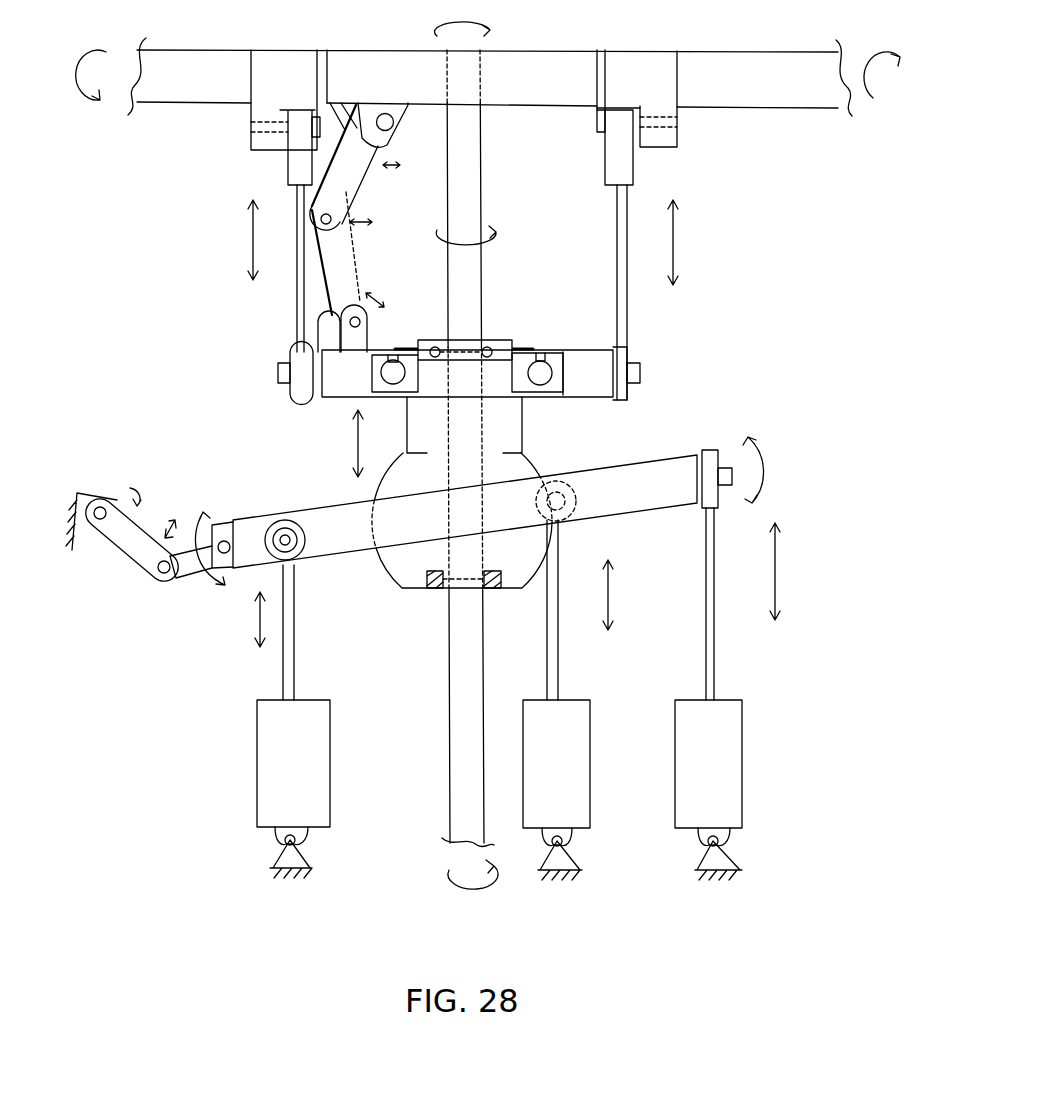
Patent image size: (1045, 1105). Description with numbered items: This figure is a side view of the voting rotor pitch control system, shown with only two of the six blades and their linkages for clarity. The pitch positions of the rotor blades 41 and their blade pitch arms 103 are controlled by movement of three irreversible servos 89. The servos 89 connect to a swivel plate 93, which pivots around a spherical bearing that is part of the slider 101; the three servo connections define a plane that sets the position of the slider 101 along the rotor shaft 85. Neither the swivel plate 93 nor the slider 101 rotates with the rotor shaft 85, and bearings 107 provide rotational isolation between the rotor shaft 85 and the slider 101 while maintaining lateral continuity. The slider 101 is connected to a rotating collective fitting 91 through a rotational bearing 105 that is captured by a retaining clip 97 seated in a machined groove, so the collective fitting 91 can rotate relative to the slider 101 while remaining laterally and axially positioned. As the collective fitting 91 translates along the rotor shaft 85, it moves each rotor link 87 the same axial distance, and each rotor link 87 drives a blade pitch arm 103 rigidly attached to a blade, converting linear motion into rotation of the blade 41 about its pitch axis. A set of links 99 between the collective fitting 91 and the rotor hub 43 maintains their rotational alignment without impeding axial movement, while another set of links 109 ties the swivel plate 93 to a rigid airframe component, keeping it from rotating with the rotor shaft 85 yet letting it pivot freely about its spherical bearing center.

The rotor blade 41 is at (167, 60).
The rotor hub 43 is at (530, 57).
The rotor shaft 85 is at (470, 155).
The rotor link 87 is at (300, 325).
The irreversible servo 89 is at (265, 757).
The collective fitting 91 is at (340, 390).
The swivel plate 93 is at (635, 478).
The retaining clip 97 is at (527, 348).
The set of links 99 is at (343, 252).
The slider 101 is at (510, 420).
The blade pitch arm 103 is at (283, 65).
The rotational bearing 105 is at (552, 363).
The bearing 107 is at (497, 347).
The link 109 is at (197, 567).